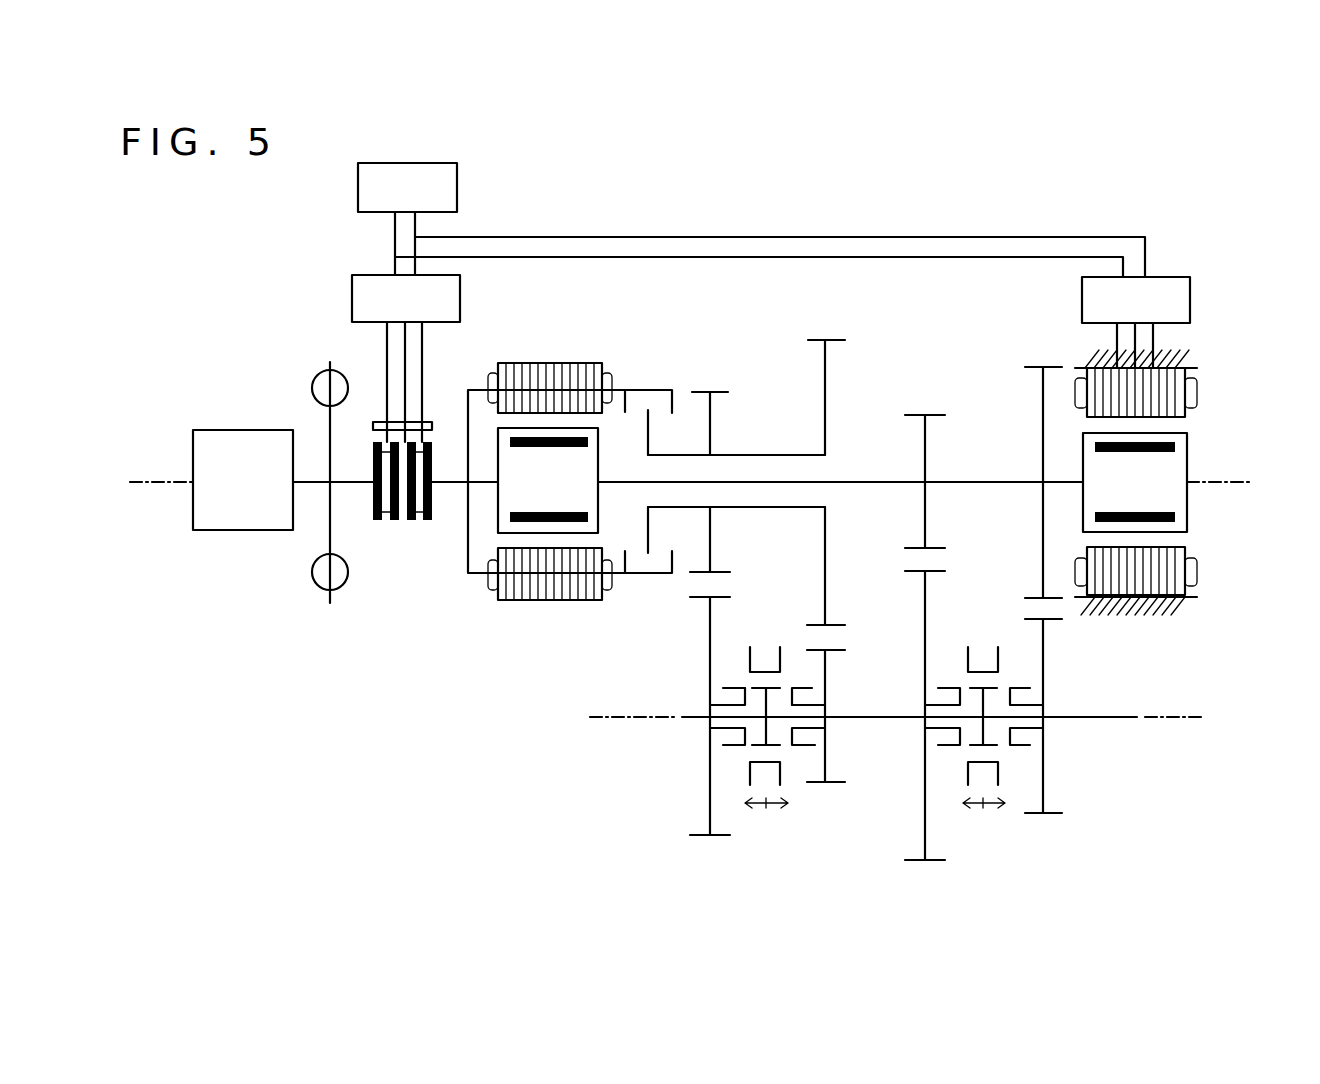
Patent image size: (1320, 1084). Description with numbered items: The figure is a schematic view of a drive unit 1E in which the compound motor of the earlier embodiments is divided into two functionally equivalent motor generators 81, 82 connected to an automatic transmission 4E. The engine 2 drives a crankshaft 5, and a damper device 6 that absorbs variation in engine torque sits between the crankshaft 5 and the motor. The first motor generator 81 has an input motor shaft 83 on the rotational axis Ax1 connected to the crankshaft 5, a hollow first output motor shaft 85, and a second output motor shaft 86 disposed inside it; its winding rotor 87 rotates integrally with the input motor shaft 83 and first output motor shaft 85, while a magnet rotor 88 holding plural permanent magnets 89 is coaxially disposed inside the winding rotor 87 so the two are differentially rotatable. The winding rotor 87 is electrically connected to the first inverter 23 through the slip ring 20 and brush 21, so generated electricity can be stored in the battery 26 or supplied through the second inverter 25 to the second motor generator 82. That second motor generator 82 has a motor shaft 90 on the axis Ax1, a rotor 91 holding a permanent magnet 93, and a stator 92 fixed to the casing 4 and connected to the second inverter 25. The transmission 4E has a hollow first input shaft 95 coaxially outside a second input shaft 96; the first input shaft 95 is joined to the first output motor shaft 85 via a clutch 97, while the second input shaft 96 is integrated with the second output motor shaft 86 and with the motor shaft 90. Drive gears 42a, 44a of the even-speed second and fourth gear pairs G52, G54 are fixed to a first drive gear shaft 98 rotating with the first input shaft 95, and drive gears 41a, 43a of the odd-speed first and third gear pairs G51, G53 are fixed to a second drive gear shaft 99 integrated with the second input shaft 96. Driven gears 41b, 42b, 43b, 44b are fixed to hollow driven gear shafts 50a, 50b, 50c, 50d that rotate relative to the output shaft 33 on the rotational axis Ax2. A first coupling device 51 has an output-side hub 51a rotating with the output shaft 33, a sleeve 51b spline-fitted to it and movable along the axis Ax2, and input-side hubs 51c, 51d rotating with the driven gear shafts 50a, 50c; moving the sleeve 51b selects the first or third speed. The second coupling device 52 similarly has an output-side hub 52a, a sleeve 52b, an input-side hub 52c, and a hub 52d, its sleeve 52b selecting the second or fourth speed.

The drive unit 1E is at (730, 178).
The engine 2 is at (210, 430).
The casing 4 is at (1175, 352).
The automatic transmission 4E is at (970, 330).
The crankshaft 5 is at (310, 480).
The damper device 6 is at (320, 378).
The slip ring 20 is at (376, 521).
The brush 21 is at (380, 420).
The first inverter 23 is at (352, 298).
The second inverter 25 is at (1190, 293).
The battery 26 is at (358, 185).
The output shaft 33 is at (1125, 716).
The drive gear 41a is at (928, 432).
The driven gear 41b is at (828, 615).
The drive gear 42a is at (712, 402).
The driven gear 42b is at (710, 628).
The drive gear 43a is at (1042, 385).
The driven gear 43b is at (1045, 638).
The drive gear 44a is at (827, 352).
The driven gear 44b is at (828, 672).
The driven gear shaft 50a is at (930, 733).
The driven gear shaft 50b is at (725, 690).
The driven gear shaft 50c is at (1035, 732).
The driven gear shaft 50d is at (823, 700).
The first coupling device 51 is at (983, 620).
The output-side hub 51a is at (1005, 697).
The sleeve 51b is at (968, 655).
The input-side hub 51c is at (950, 688).
The input-side hub 51d is at (1018, 688).
The second coupling device 52 is at (766, 612).
The output-side hub 52a is at (800, 730).
The sleeve 52b is at (803, 688).
The input-side hub 52c is at (735, 688).
The output-side hub 52d is at (782, 655).
The first motor generator 81 is at (573, 325).
The second motor generator 82 is at (1212, 385).
The input motor shaft 83 is at (447, 484).
The first output motor shaft 85 is at (614, 390).
The second output motor shaft 86 is at (622, 480).
The winding rotor 87 is at (515, 363).
The magnet rotor 88 is at (594, 502).
The permanent magnets 89 is at (512, 440).
The motor shaft 90 is at (1063, 480).
The rotor 91 is at (1185, 448).
The stator 92 is at (1194, 392).
The permanent magnet 93 is at (1172, 517).
The first input shaft 95 is at (680, 455).
The second input shaft 96 is at (856, 480).
The clutch 97 is at (671, 389).
The first drive gear shaft 98 is at (802, 455).
The second drive gear shaft 99 is at (985, 484).
The first gear pair G51 is at (925, 410).
The second gear pair G52 is at (715, 382).
The third gear pair G53 is at (1043, 355).
The fourth gear pair G54 is at (828, 335).
The rotational axis Ax1 is at (160, 480).
The rotational axis Ax2 is at (622, 727).